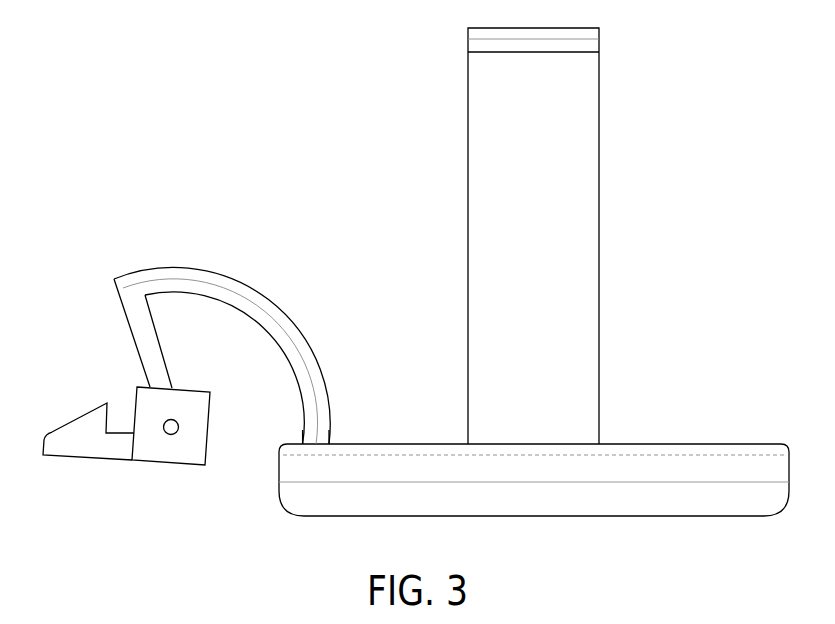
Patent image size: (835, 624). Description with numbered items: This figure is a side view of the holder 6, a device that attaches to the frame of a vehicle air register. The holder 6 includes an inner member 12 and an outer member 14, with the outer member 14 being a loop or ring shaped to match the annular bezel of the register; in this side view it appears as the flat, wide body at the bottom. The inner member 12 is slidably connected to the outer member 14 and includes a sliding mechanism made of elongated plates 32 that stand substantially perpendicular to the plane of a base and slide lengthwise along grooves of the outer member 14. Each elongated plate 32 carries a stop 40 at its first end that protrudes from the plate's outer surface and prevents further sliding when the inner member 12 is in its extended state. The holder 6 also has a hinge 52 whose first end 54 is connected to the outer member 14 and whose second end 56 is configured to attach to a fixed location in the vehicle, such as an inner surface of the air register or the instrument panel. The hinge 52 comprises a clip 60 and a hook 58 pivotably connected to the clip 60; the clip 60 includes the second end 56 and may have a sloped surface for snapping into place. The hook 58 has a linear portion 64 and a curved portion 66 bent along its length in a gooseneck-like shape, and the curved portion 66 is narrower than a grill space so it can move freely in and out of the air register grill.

The holder 6 is at (584, 232).
The inner member 12 is at (600, 328).
The outer member 14 is at (700, 503).
The elongated plate 32 is at (580, 81).
The stop 40 is at (565, 40).
The hinge 52 is at (212, 313).
The first end 54 is at (305, 426).
The second end 56 is at (78, 447).
The hook 58 is at (277, 308).
The clip 60 is at (109, 448).
The linear portion 64 is at (143, 333).
The curved portion 66 is at (283, 343).